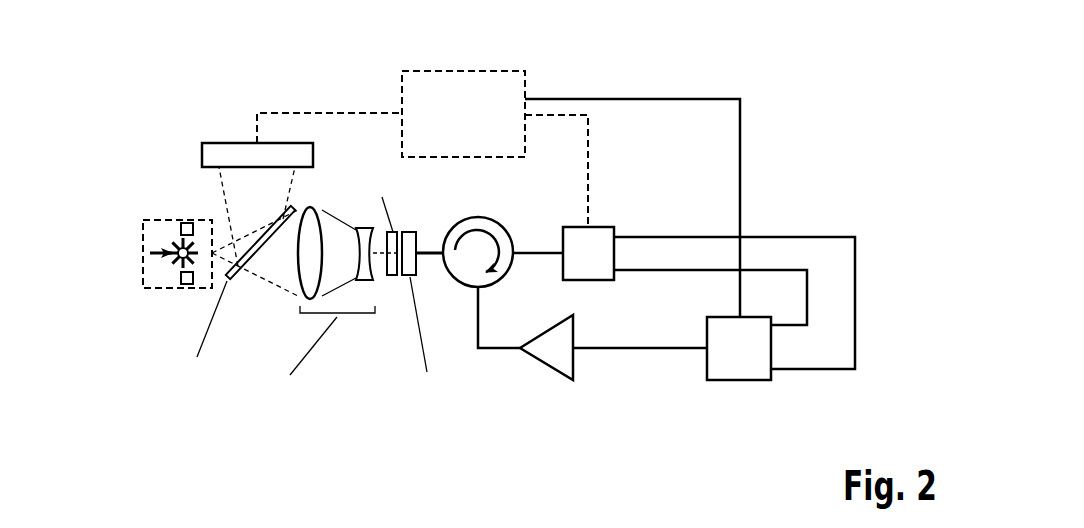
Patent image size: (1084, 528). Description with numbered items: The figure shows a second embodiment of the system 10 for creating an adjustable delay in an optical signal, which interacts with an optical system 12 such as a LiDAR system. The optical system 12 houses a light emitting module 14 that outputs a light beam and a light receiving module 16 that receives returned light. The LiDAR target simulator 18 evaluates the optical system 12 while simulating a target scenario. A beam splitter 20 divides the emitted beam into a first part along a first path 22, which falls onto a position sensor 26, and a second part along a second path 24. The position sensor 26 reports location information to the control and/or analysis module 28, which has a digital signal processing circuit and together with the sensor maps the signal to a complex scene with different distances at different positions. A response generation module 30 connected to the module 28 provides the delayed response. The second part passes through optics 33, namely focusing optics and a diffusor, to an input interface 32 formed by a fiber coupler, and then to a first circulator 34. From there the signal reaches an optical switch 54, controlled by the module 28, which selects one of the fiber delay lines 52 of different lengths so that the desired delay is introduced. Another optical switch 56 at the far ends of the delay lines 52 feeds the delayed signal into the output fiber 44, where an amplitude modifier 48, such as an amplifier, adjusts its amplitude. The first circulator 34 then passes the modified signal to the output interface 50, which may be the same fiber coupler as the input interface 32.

The system 10 is at (777, 82).
The optical system 12 is at (143, 252).
The light emitting module 14 is at (182, 227).
The light receiving module 16 is at (181, 277).
The LiDAR target simulator 18 is at (637, 176).
The beam splitter 20 is at (242, 281).
The first path 22 is at (302, 192).
The second path 24 is at (270, 300).
The position sensor 26 is at (232, 143).
The control and/or analysis module 28 is at (430, 71).
The response generation module 30 is at (677, 207).
The input interface 32 is at (411, 228).
The optics 33 is at (335, 332).
The first circulator 34 is at (467, 290).
The output fiber 44 is at (650, 350).
The amplitude modifier 48 is at (575, 330).
The output interface 50 is at (402, 286).
The fiber delay lines 52 is at (768, 269).
The optical switch 54 is at (565, 227).
The another optical switch 56 is at (740, 381).